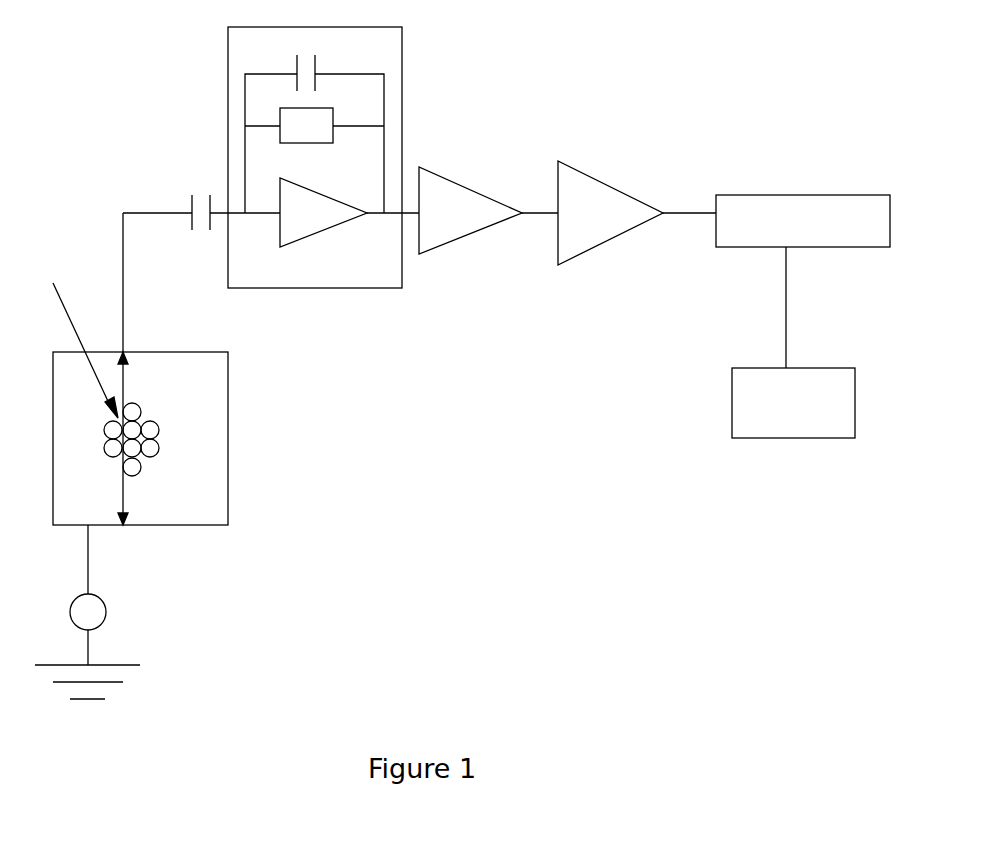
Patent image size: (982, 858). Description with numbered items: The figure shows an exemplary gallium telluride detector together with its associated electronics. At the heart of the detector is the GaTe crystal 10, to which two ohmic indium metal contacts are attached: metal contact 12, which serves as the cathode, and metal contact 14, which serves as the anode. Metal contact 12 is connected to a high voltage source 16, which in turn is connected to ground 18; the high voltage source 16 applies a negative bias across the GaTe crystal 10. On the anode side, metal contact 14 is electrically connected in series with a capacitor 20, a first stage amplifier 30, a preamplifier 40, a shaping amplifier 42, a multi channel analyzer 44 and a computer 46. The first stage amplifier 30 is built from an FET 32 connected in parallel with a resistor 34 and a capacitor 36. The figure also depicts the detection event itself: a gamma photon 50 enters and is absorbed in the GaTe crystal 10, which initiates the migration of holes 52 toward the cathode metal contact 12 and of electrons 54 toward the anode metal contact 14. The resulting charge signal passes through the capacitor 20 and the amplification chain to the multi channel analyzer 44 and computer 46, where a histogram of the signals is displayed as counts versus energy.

The GaTe crystal 10 is at (228, 418).
The metal contact 12 is at (210, 525).
The metal contact 14 is at (177, 352).
The high voltage source 16 is at (98, 595).
The ground 18 is at (118, 665).
The capacitor 20 is at (190, 200).
The first stage amplifier 30 is at (402, 74).
The FET 32 is at (317, 233).
The resistor 34 is at (310, 143).
The capacitor 36 is at (242, 64).
The preamplifier 40 is at (477, 231).
The shaping amplifier 42 is at (617, 238).
The multi channel analyzer 44 is at (763, 197).
The computer 46 is at (732, 402).
The gamma photon 50 is at (67, 295).
The holes 52 is at (123, 490).
The electrons 54 is at (123, 377).